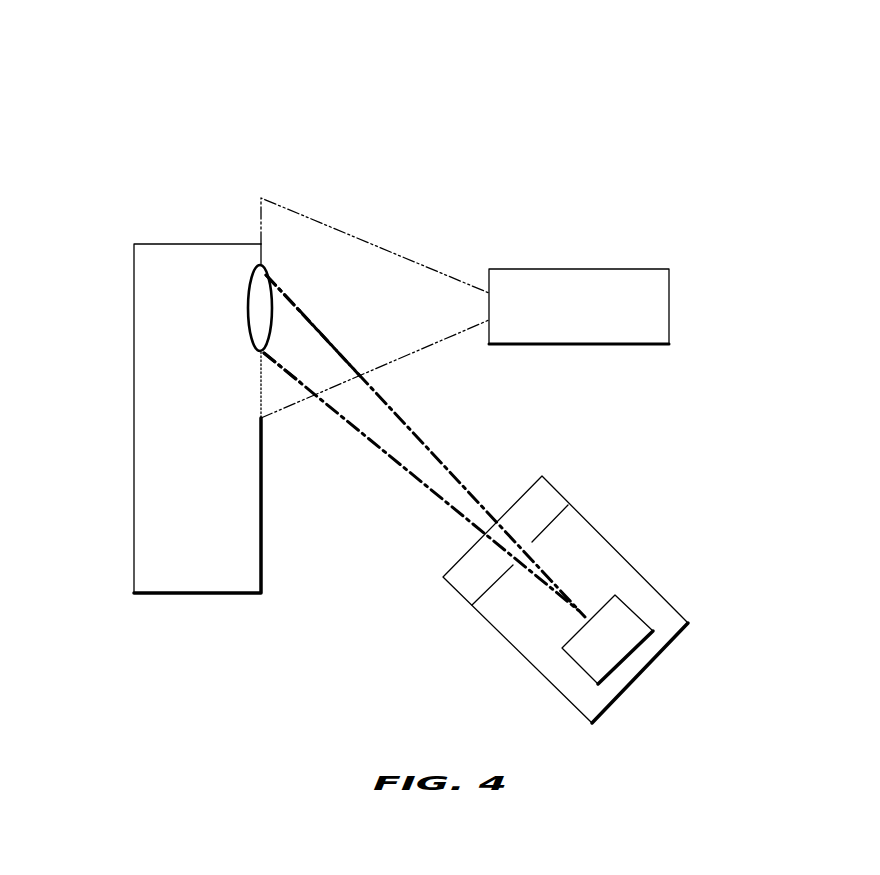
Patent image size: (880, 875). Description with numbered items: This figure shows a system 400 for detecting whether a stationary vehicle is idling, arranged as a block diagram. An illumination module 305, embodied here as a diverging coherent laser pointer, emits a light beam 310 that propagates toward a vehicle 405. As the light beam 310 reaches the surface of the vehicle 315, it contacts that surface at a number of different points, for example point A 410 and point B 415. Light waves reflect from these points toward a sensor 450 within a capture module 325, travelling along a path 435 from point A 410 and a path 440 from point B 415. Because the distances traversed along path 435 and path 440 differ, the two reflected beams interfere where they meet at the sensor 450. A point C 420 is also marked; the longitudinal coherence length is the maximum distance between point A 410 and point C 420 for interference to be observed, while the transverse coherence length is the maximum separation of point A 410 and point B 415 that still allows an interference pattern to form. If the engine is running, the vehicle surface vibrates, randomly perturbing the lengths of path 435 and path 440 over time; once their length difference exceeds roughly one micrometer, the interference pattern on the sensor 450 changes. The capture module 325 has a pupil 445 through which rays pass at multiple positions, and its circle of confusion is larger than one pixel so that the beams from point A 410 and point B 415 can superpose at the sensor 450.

The optical measurement system 400 is at (585, 172).
The vehicle 405 is at (184, 244).
The illumination module 305 is at (578, 269).
The light beam 310 is at (377, 280).
The surface of the vehicle 315 is at (248, 306).
The point A 410 is at (270, 260).
The point B 415 is at (267, 362).
The point C 420 is at (345, 337).
The path 435 is at (455, 472).
The path 440 is at (436, 497).
The capture module 325 is at (630, 560).
The pupil 445 is at (545, 548).
The sensor 450 is at (638, 608).